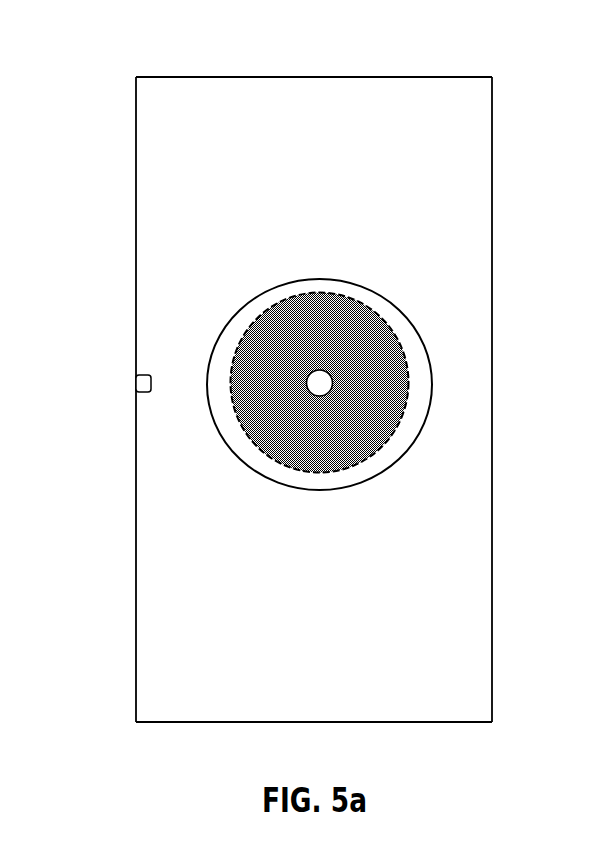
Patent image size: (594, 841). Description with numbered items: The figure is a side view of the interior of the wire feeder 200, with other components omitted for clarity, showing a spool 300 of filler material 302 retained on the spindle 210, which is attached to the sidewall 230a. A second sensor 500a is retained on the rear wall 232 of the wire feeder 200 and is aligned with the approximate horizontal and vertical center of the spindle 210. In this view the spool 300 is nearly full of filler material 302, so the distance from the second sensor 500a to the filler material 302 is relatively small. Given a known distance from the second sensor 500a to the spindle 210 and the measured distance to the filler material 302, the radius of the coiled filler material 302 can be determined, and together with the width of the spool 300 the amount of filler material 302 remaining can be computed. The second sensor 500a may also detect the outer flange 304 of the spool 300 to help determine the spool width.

The wire feeder 200 is at (104, 85).
The rear wall 232 is at (128, 247).
The second sensor 500a is at (127, 379).
The spool 300 is at (325, 371).
The outer flange 304 is at (295, 483).
The filler material 302 is at (358, 423).
The spindle 210 is at (333, 385).
The sidewall 230a is at (478, 571).